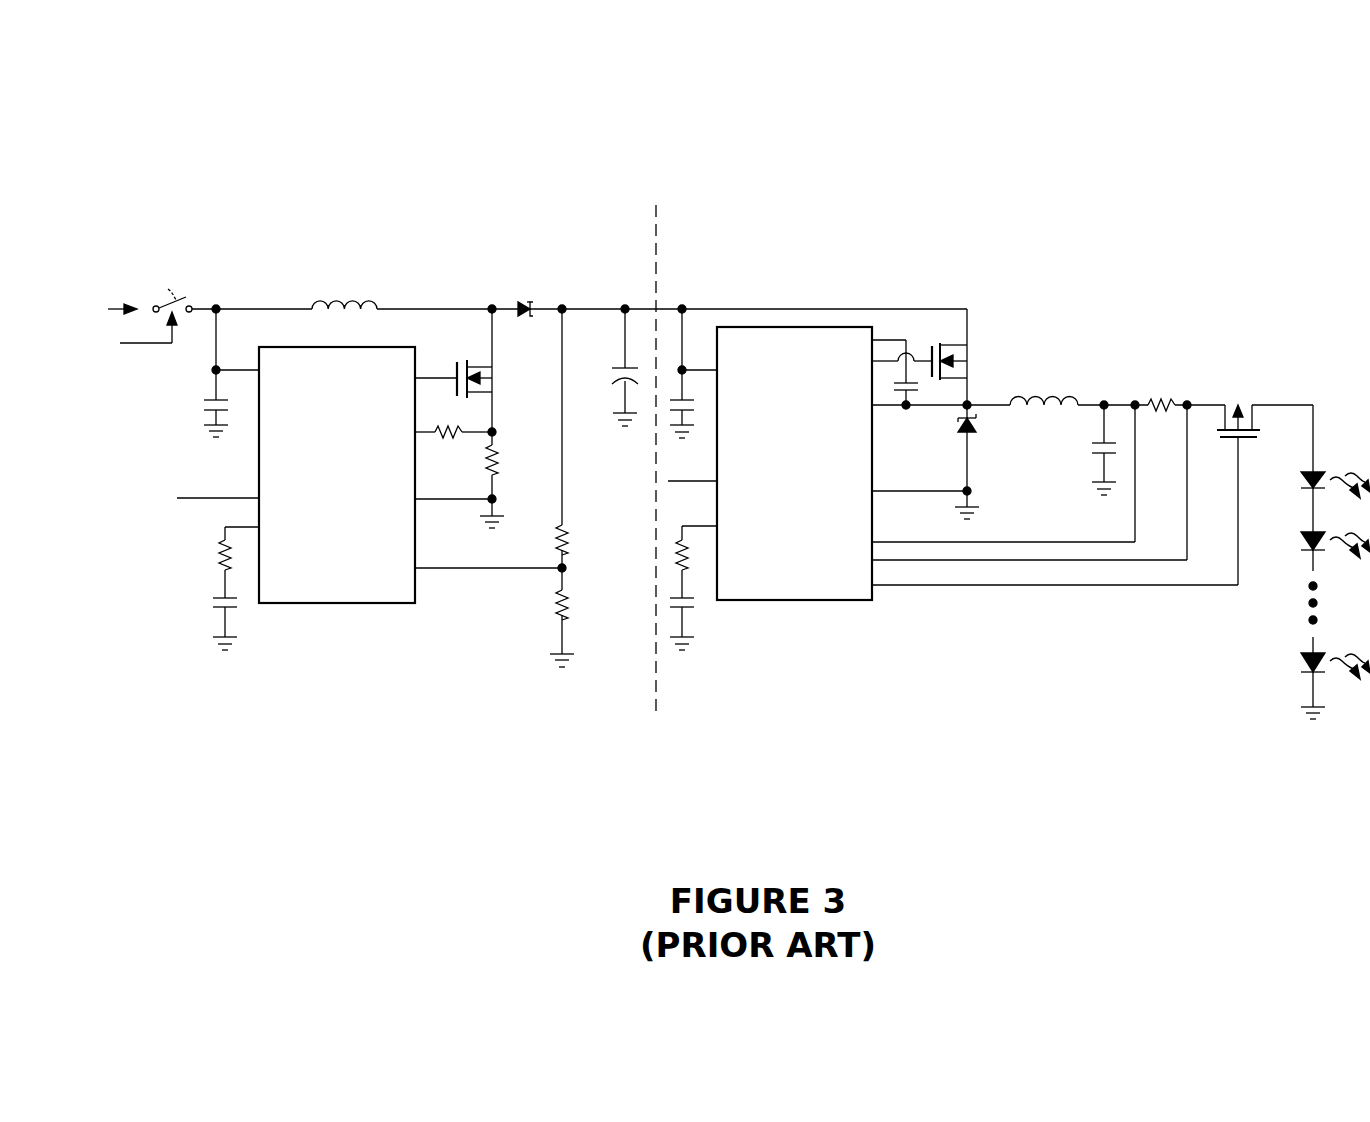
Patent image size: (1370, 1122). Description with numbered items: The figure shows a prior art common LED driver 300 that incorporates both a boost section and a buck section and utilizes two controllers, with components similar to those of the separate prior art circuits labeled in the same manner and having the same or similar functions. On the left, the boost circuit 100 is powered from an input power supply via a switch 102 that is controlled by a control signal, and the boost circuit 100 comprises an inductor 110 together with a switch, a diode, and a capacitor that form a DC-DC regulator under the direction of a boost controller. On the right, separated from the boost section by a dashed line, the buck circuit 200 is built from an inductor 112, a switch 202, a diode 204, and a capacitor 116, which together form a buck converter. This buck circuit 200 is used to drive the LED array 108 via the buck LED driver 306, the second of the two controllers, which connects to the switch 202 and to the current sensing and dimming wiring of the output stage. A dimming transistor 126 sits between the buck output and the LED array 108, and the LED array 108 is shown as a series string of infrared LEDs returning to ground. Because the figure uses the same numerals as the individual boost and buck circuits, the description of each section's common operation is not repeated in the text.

The common LED driver 300 is at (778, 62).
The boost circuit 100 is at (540, 236).
The buck circuit 200 is at (763, 234).
The switch 102 is at (181, 290).
The inductor 110 is at (365, 302).
The switch 202 is at (984, 338).
The inductor 112 is at (1063, 390).
The capacitor 116 is at (1080, 454).
The diode 204 is at (976, 465).
The dimming transistor P1 126 is at (1250, 366).
The LED array 108 is at (1317, 470).
The buck LED driver 306 is at (802, 602).